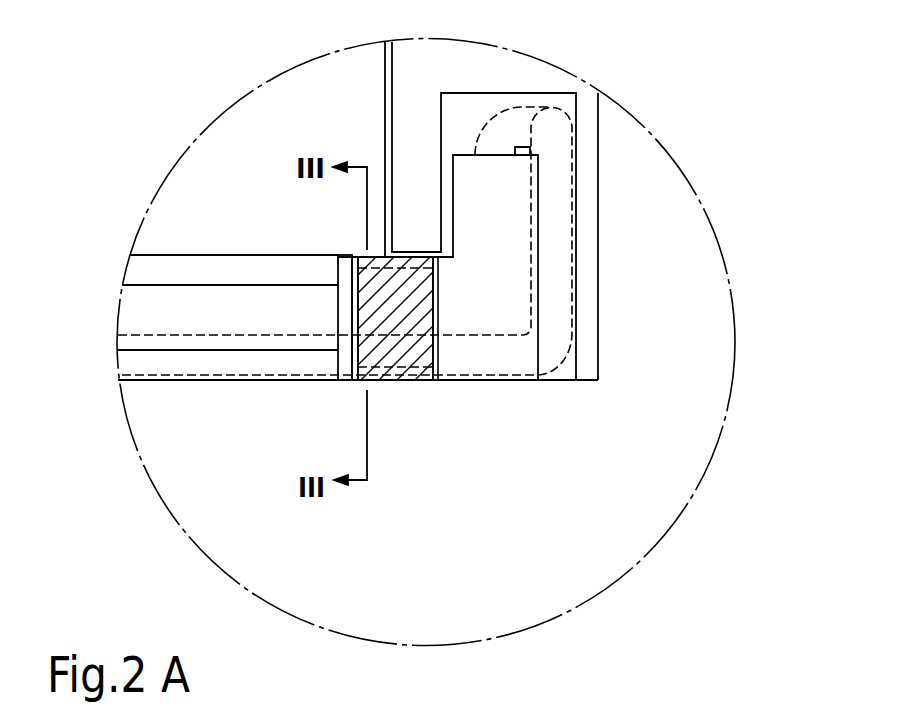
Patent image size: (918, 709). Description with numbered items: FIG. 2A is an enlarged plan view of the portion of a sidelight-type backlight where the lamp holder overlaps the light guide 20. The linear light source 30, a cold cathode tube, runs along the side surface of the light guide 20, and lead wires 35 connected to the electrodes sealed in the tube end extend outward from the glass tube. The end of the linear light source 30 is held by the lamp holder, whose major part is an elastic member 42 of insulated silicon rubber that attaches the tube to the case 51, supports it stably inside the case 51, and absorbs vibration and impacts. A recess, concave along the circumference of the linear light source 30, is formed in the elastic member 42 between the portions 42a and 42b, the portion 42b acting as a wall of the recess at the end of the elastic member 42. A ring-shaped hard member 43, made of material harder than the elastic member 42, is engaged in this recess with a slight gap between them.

The light guide 20 is at (242, 128).
The linear light source 30 is at (207, 350).
The lead wires 35 is at (553, 107).
The elastic member 42 is at (549, 393).
The elastic member portion 42a is at (497, 382).
The elastic member end portion 42b is at (335, 380).
The ring-shaped hard member 43 is at (408, 382).
The case 51 is at (442, 68).